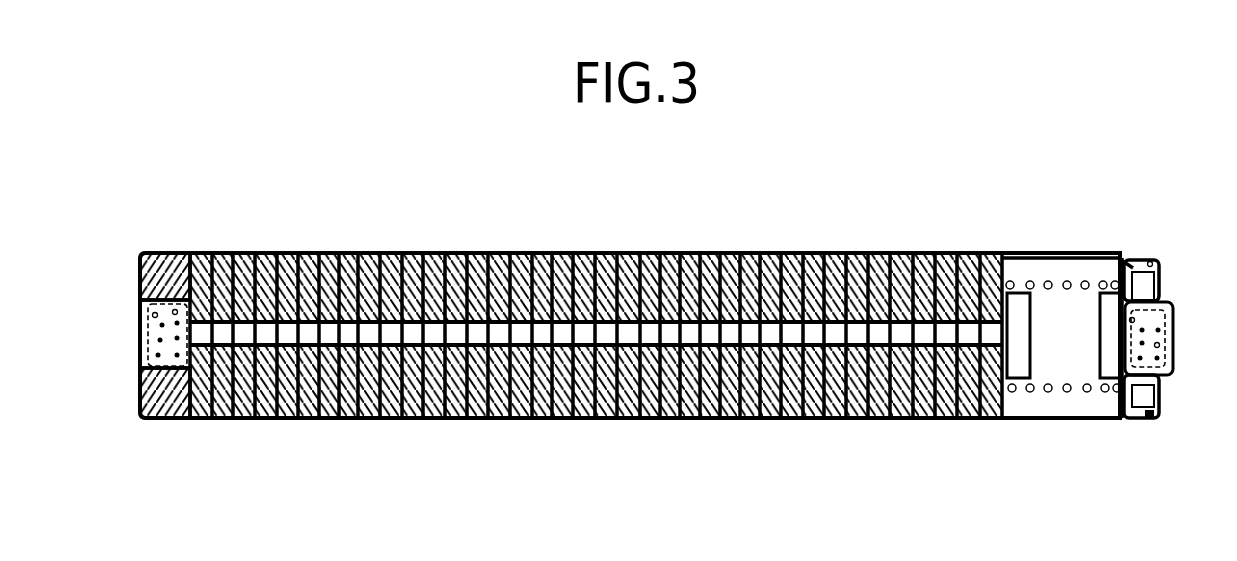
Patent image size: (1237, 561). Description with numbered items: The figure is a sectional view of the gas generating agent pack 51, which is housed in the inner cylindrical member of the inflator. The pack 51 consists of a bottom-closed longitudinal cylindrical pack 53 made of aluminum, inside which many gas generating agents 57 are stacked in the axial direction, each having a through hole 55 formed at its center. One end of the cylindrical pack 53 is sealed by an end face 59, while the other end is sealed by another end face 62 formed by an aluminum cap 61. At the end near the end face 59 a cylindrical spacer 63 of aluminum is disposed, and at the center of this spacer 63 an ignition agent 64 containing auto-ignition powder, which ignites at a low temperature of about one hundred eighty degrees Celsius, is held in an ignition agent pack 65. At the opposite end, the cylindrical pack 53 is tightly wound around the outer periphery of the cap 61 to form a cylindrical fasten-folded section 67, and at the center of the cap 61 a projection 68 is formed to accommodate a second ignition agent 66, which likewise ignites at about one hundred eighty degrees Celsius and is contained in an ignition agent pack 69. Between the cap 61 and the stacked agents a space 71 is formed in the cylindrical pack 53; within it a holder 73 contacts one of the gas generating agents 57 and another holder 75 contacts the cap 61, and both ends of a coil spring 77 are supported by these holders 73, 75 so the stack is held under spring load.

The gas generating agent pack 51 is at (564, 251).
The cylindrical pack 53 is at (420, 419).
The through hole 55 is at (835, 342).
The gas generating agents 57 is at (267, 252).
The end face 59 is at (140, 392).
The cap 61 is at (1140, 256).
The end face 62 is at (1163, 392).
The cylindrical spacer 63 is at (165, 252).
The ignition agent 64 is at (168, 368).
The ignition agent pack 65 is at (147, 330).
The ignition agent 66 is at (1175, 305).
The fasten-folded section 67 is at (1153, 424).
The projection 68 is at (1177, 350).
The ignition agent pack 69 is at (1177, 333).
The space 71 is at (1025, 292).
The holder 73 is at (1010, 393).
The holder 75 is at (1100, 390).
The coil spring 77 is at (1048, 282).